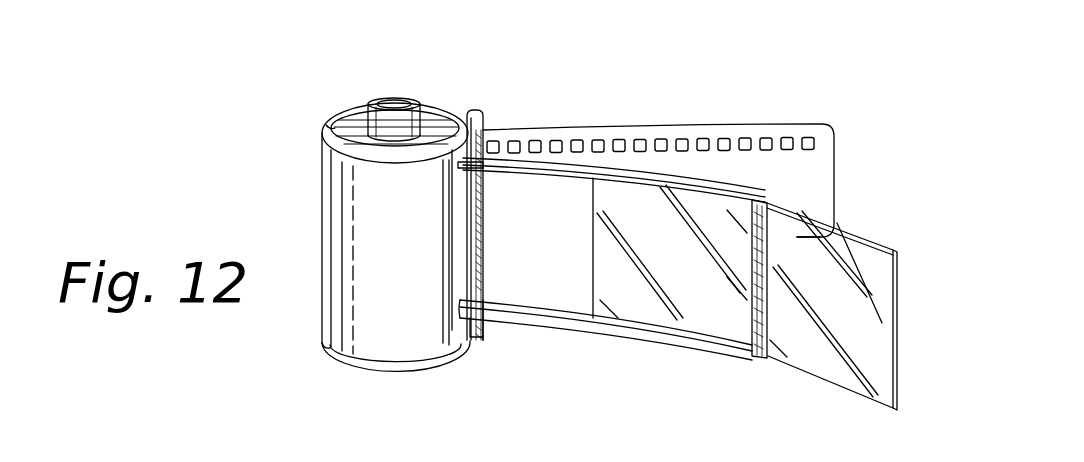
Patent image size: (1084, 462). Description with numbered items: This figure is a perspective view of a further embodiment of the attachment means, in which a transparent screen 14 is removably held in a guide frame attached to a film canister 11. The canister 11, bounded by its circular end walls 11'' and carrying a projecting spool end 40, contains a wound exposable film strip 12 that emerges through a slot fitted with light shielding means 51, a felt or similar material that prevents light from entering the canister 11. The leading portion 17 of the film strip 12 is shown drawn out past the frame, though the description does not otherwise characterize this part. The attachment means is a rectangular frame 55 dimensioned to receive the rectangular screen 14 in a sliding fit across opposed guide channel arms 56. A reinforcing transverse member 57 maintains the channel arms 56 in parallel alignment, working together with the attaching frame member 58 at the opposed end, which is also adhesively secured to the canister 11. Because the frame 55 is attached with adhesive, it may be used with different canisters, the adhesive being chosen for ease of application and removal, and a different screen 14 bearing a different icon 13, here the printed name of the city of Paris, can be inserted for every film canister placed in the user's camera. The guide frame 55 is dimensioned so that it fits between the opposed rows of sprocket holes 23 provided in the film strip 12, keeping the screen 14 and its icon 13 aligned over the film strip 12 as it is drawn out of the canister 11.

The film canister 11 is at (349, 237).
The circular end walls 11'' is at (376, 248).
The spool end 40 is at (422, 127).
The light shielding means 51 is at (470, 110).
The attaching frame member 58 is at (453, 200).
The guide channel arms 56 is at (623, 173).
The rectangular frame 55 is at (615, 333).
The reinforcing transverse member 57 is at (600, 310).
The film strip 12 is at (762, 168).
The sprocket holes 23 is at (727, 138).
The film leader 17 is at (797, 177).
The icon 13 is at (660, 320).
The screen 14 is at (808, 345).